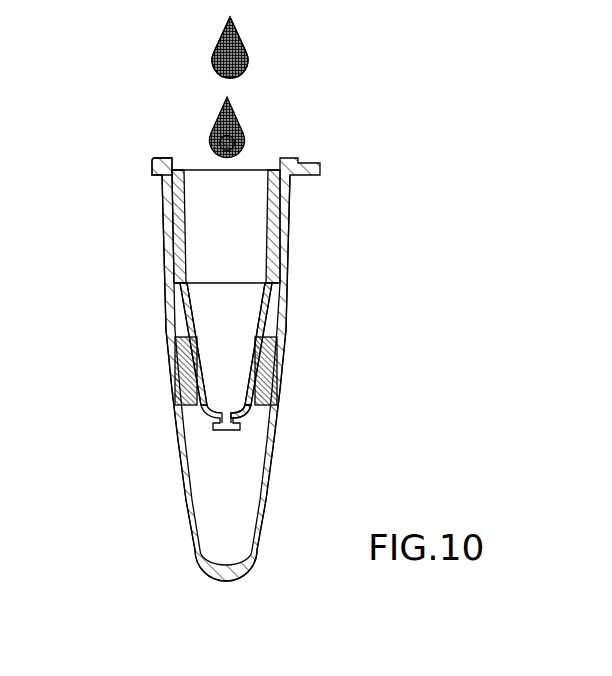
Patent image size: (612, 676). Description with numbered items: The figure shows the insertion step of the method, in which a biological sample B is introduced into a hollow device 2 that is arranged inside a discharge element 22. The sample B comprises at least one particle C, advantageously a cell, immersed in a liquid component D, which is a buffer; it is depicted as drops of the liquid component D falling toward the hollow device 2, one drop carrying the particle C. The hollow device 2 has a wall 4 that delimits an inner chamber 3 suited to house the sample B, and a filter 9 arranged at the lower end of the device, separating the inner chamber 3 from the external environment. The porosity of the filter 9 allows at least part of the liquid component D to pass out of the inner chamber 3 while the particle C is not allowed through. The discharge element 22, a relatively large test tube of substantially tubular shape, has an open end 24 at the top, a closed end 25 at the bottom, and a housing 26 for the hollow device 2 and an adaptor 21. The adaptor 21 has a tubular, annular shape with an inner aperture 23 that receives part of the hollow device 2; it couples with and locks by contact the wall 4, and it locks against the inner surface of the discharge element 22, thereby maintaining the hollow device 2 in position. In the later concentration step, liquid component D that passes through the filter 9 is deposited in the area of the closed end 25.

The hollow device 2 is at (268, 152).
The inner chamber 3 is at (198, 303).
The wall 4 is at (184, 236).
The filter 9 is at (229, 428).
The adaptor 21 is at (270, 362).
The discharge element 22 is at (158, 428).
The inner aperture 23 is at (249, 367).
The open end 24 is at (146, 173).
The closed end 25 is at (196, 577).
The housing 26 is at (252, 520).
The liquid component D is at (221, 56).
The sample B is at (280, 58).
The particle C is at (234, 140).